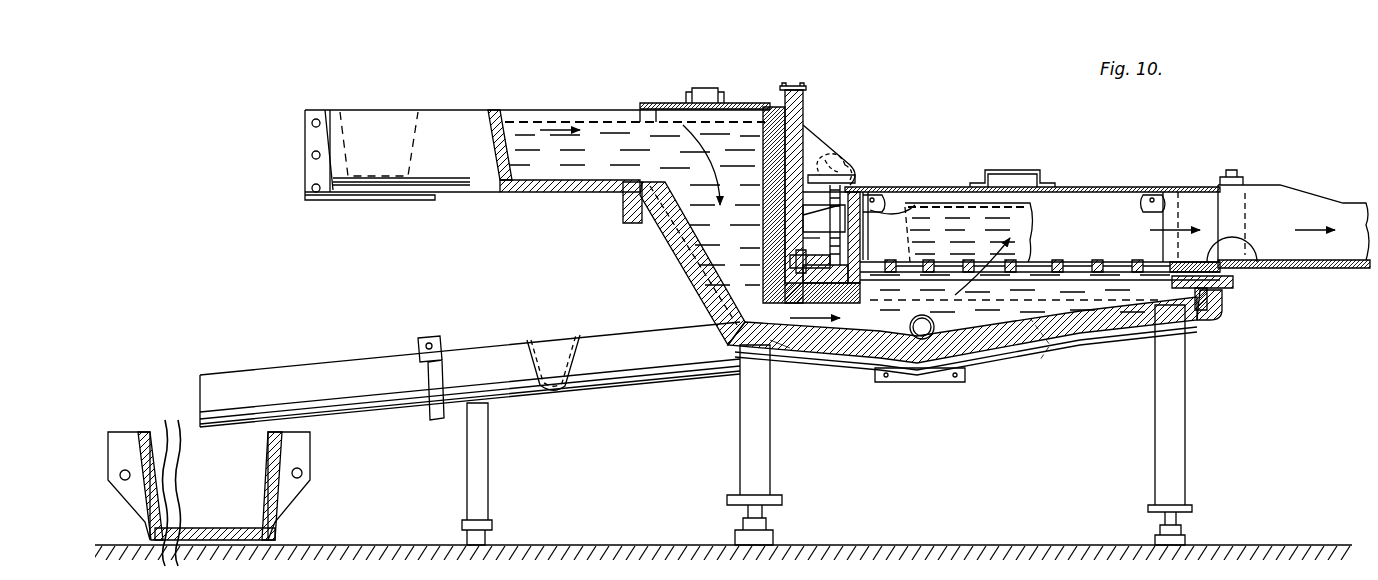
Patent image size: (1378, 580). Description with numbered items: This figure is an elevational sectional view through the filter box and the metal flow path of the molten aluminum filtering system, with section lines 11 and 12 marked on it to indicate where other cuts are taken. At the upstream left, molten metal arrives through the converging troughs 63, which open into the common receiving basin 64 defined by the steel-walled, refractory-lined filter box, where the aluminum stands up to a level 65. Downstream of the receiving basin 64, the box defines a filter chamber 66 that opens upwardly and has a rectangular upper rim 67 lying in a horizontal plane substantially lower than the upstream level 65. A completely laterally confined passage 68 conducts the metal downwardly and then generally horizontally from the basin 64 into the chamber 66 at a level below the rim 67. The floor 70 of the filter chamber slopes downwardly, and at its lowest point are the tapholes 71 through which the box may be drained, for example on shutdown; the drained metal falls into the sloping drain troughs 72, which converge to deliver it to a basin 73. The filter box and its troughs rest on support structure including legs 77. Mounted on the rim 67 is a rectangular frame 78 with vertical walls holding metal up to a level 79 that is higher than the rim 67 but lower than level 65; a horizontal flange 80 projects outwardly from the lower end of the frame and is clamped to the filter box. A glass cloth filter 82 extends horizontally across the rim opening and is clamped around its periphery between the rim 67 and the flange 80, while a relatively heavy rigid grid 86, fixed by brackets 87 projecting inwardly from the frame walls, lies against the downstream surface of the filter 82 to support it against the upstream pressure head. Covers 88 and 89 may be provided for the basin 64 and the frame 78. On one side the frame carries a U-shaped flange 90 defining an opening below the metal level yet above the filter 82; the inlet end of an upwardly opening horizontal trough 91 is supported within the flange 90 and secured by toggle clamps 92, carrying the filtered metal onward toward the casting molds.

The converging troughs 63 is at (355, 115).
The receiving basin 64 is at (745, 130).
The metal level 65 is at (665, 102).
The filter chamber 66 is at (1075, 330).
The upper rim 67 is at (1222, 300).
The laterally confined passage 68 is at (800, 352).
The floor 70 is at (1035, 340).
The tapholes 71 is at (934, 318).
The drain troughs 72 is at (495, 385).
The basin 73 is at (278, 497).
The legs 77 is at (748, 483).
The rectangular frame 78 is at (905, 230).
The metal level 79 is at (918, 200).
The horizontal flange 80 is at (858, 290).
The glass cloth filter 82 is at (1082, 264).
The rigid grid 86 is at (1097, 262).
The brackets 87 is at (855, 170).
The cover 88 is at (702, 88).
The cover 89 is at (1020, 172).
The U-shaped flange 90 is at (1250, 262).
The horizontal trough 91 is at (1323, 268).
The toggle clamps 92 is at (1231, 172).
The section line 11 is at (1351, 285).
The section line 12 is at (920, 65).